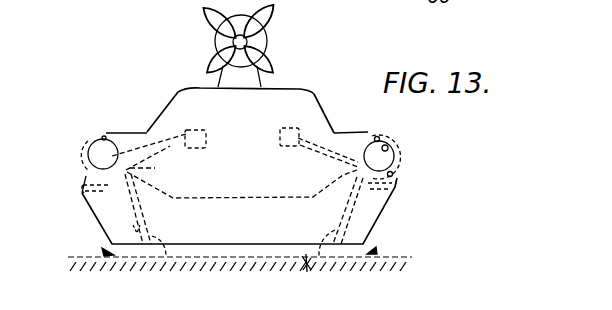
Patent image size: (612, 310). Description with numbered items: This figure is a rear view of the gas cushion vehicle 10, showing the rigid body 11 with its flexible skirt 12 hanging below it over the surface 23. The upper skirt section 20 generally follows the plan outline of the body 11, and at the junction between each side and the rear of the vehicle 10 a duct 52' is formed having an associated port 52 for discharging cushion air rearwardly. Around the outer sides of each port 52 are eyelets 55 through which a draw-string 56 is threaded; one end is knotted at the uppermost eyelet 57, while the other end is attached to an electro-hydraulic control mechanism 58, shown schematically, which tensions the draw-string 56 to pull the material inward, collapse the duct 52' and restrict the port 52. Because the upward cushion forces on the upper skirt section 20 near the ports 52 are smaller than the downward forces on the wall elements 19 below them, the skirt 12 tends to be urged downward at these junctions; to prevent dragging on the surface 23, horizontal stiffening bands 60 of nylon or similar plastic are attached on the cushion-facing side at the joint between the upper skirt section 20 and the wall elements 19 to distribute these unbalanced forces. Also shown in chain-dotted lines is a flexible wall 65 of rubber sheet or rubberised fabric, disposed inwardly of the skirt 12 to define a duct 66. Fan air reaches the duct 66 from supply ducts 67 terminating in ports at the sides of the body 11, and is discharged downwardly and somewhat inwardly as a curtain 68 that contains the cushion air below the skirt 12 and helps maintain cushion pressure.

The vehicle 10 is at (428, 134).
The body 11 is at (326, 120).
The skirt 12 is at (79, 156).
The wall elements 19 is at (382, 224).
The upper skirt section 20 is at (353, 135).
The surface 23 is at (404, 263).
The port 52 is at (263, 135).
The duct 52' is at (265, 148).
The eyelets 55 is at (95, 173).
The draw-string 56 is at (83, 195).
The uppermost eyelet 57 is at (120, 140).
The electro-hydraulic control mechanism 58 is at (200, 123).
The horizontal stiffening bands 60 is at (100, 194).
The flexible wall 65 is at (299, 276).
The duct 66 is at (170, 272).
The supply ducts 67 is at (156, 167).
The curtain 68 is at (113, 257).